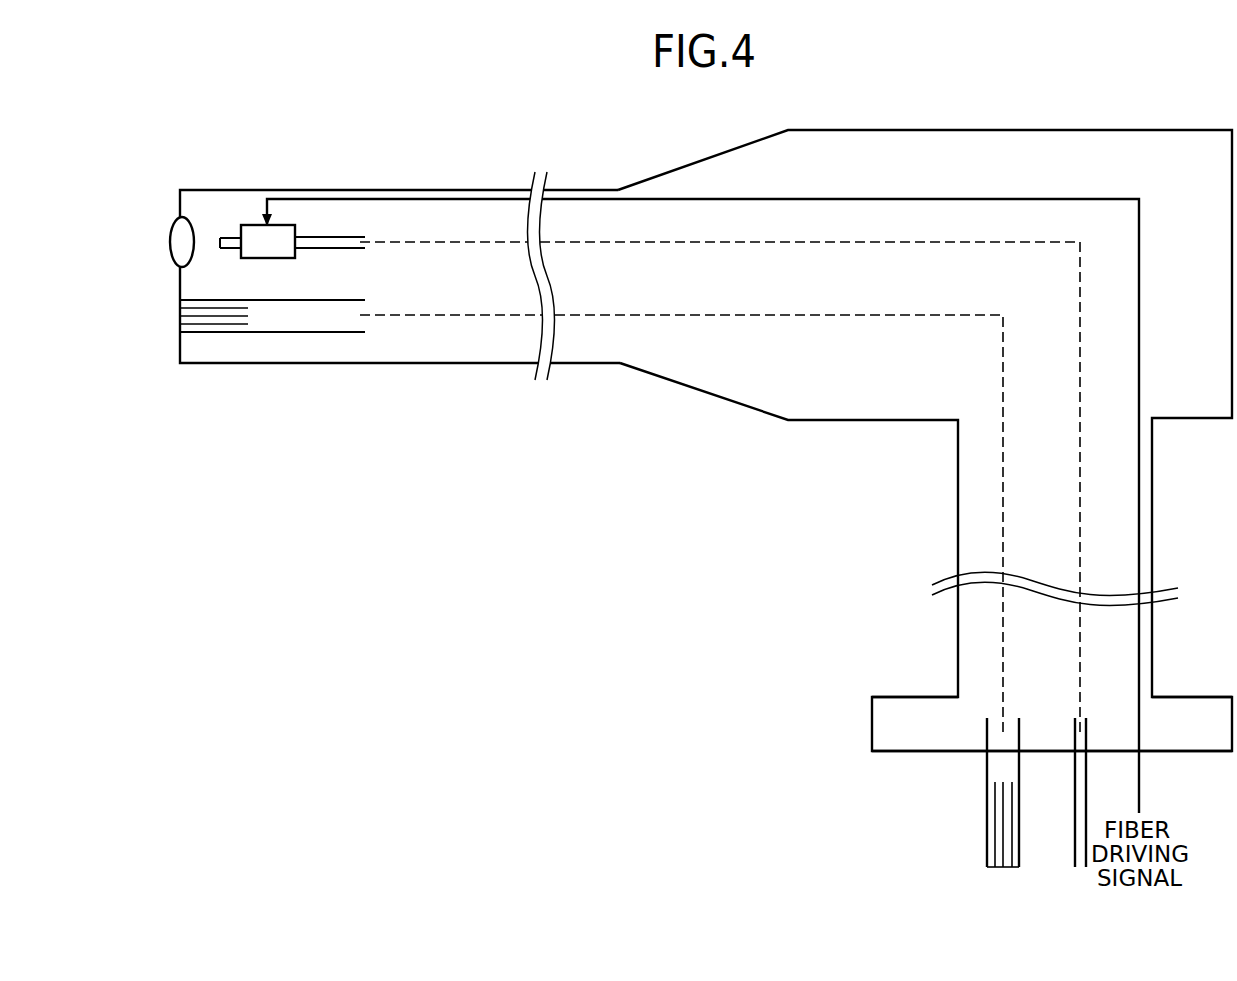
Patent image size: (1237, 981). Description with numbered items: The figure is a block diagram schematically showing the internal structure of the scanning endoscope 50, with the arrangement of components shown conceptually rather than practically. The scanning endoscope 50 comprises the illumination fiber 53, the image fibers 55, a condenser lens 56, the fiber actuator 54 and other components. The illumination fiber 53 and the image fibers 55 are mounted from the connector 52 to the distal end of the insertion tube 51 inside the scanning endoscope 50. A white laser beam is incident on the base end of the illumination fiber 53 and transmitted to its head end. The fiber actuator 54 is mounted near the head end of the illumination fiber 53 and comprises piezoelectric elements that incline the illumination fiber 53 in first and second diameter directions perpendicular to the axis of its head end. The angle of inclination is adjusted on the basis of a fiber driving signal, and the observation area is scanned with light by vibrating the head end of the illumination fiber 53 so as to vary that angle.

The scanning endoscope 50 is at (977, 126).
The insertion tube 51 is at (452, 190).
The connector 52 is at (872, 724).
The illumination fiber 53 is at (1075, 822).
The fiber actuator 54 is at (257, 225).
The image fibers 55 is at (987, 822).
The condenser lens 56 is at (170, 248).